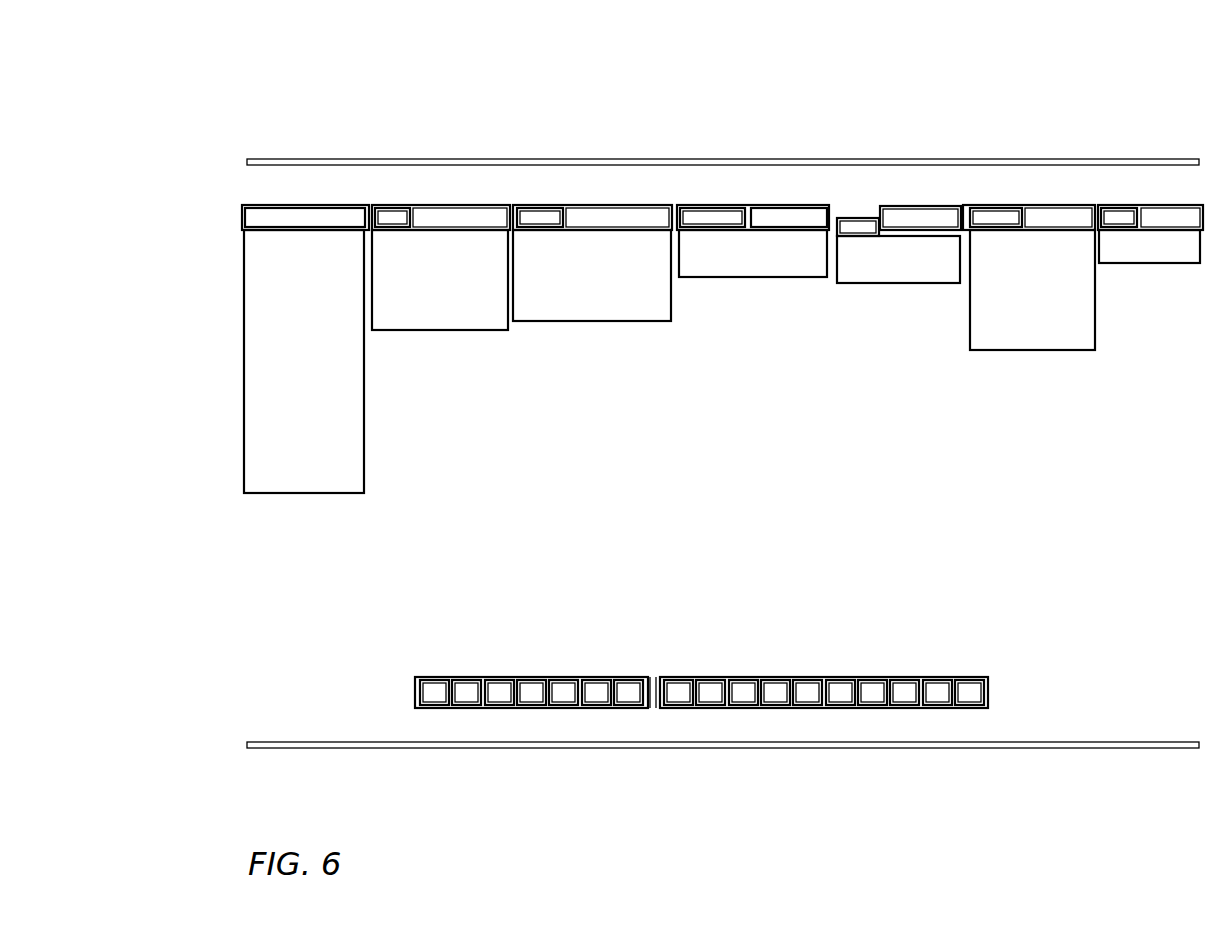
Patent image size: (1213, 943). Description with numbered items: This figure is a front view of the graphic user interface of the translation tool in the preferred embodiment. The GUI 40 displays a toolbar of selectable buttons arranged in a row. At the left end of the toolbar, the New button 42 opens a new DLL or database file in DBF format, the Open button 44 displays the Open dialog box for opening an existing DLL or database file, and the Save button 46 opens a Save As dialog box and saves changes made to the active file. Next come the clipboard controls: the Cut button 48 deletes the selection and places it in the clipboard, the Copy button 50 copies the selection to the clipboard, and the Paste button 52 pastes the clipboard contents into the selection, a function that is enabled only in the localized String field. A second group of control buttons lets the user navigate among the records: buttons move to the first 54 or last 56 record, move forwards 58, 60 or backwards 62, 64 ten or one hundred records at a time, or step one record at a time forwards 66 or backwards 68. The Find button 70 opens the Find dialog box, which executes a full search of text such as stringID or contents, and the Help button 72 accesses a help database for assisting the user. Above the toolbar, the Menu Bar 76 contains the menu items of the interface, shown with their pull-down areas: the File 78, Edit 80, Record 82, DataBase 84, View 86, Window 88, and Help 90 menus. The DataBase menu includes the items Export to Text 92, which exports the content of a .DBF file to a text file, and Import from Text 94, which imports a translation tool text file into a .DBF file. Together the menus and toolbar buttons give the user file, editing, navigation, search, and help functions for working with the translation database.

The GUI 40 is at (404, 681).
The New button 42 is at (436, 693).
The Open button 44 is at (466, 690).
The Save button 46 is at (498, 693).
The Cut button 48 is at (531, 690).
The Copy button 50 is at (563, 693).
The Paste button 52 is at (597, 690).
The first record control button 54 is at (678, 690).
The last record control button 56 is at (628, 693).
The forward ten records control button 58 is at (840, 693).
The forward one hundred records control button 60 is at (871, 690).
The backward ten records control button 62 is at (743, 690).
The backward one hundred records control button 64 is at (709, 693).
The forward one record control button 66 is at (807, 690).
The backward one record control button 68 is at (774, 693).
The Find button 70 is at (942, 690).
The Help button 72 is at (972, 693).
The Menu Bar 76 is at (602, 214).
The File menu 78 is at (280, 214).
The Edit menu 80 is at (390, 214).
The Record menu 82 is at (536, 214).
The DataBase menu 84 is at (713, 214).
The View menu 86 is at (858, 222).
The Window menu 88 is at (985, 214).
The Help menu 90 is at (1120, 214).
The Export to Text item 92 is at (802, 214).
The Import from Text item 94 is at (773, 262).